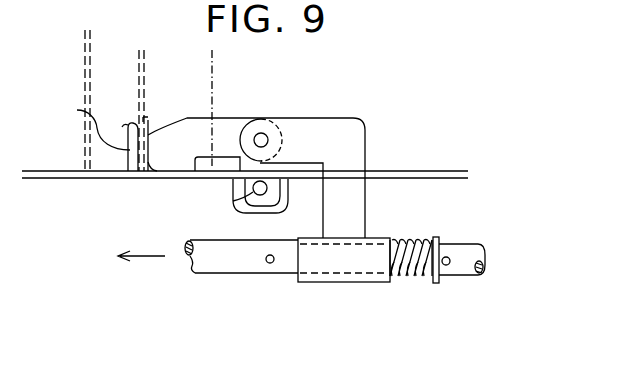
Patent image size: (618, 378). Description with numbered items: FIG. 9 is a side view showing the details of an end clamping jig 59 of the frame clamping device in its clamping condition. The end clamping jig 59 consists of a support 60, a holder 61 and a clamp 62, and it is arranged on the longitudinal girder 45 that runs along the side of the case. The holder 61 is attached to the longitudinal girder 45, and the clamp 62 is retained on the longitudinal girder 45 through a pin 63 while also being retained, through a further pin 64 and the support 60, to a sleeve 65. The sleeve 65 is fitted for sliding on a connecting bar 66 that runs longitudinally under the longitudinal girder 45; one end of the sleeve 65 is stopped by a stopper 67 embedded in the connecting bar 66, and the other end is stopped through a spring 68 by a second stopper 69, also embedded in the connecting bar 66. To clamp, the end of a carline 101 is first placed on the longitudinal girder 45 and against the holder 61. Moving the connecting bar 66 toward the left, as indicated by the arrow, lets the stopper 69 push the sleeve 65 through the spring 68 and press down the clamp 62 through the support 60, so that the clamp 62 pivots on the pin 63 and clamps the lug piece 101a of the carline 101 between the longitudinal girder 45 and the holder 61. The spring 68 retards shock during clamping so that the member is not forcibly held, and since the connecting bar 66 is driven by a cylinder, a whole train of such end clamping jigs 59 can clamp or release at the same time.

The longitudinal girder 45 is at (50, 180).
The end clamping jig 59 is at (434, 146).
The support 60 is at (360, 152).
The holder 61 is at (93, 119).
The clamp 62 is at (232, 128).
The pin 63 is at (233, 201).
The pin 64 is at (268, 136).
The sleeve 65 is at (345, 270).
The connecting bar 66 is at (200, 273).
The stopper 67 is at (268, 263).
The spring 68 is at (410, 277).
The stopper 69 is at (447, 265).
The carline 101 is at (203, 82).
The lug piece 101a is at (148, 125).